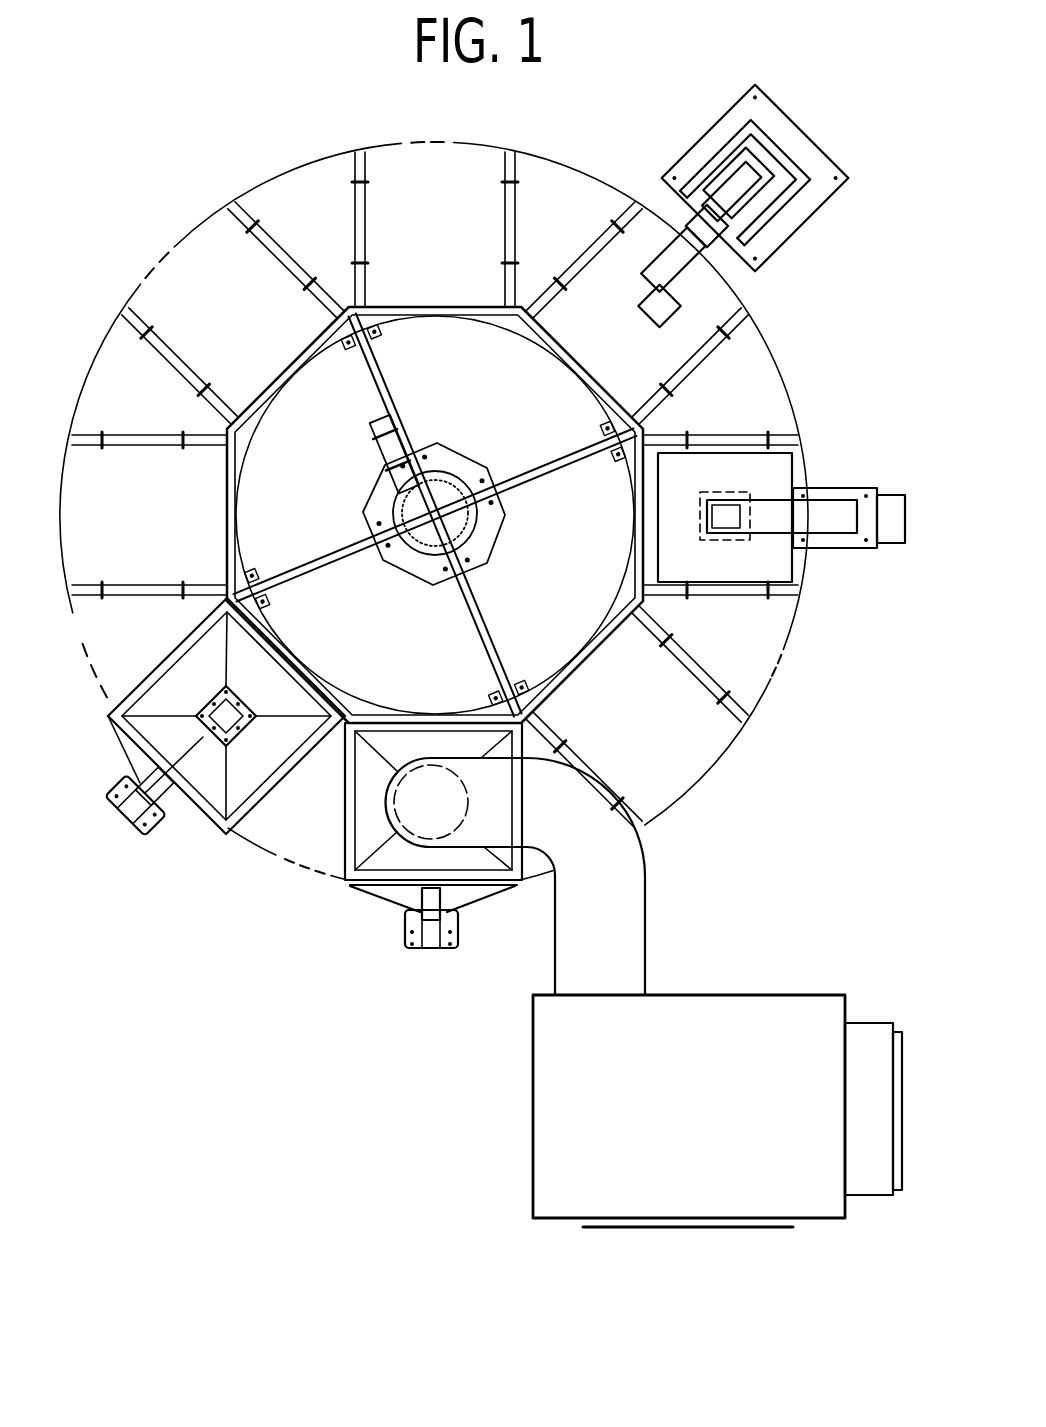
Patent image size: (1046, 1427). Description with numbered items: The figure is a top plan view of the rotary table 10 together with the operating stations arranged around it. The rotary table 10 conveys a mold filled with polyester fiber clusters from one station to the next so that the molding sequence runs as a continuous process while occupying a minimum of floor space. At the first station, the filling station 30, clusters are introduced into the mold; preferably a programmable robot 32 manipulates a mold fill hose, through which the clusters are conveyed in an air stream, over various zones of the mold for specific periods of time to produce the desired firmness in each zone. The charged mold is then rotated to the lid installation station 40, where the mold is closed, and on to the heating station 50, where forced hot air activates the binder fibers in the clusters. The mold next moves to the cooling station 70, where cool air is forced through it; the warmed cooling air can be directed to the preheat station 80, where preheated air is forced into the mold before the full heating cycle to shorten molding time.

The rotary table 10 is at (283, 363).
The filling station 30 is at (710, 305).
The programmable robot 32 is at (685, 223).
The lid installation station 40 is at (795, 565).
The heating station 50 is at (345, 858).
The cooling station 70 is at (118, 700).
The preheat station 80 is at (728, 748).